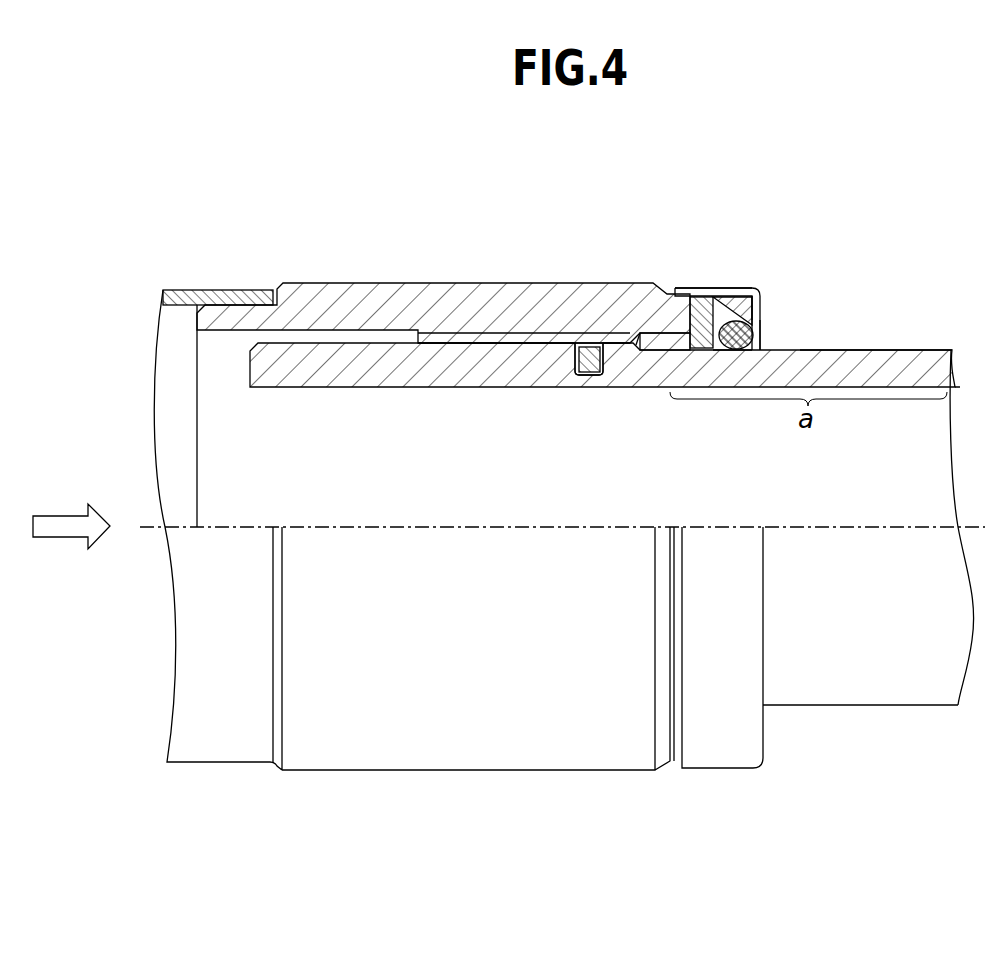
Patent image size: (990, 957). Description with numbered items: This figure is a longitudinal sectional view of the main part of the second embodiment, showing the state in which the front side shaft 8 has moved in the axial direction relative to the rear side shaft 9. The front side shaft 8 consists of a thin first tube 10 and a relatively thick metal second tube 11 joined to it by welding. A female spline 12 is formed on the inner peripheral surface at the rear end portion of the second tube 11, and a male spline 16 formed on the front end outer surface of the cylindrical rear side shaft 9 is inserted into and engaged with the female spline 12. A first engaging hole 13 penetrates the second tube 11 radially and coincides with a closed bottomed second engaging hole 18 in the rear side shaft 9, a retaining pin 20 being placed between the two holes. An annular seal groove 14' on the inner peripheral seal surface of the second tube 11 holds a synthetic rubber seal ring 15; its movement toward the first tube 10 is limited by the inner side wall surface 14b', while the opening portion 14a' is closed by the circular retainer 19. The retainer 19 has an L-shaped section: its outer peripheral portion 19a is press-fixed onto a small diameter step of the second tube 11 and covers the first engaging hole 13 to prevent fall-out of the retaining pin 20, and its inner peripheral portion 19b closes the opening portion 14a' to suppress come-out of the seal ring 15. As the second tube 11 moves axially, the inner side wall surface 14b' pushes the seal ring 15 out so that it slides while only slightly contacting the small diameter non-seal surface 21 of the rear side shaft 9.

The front side shaft 8 is at (328, 276).
The rear side shaft 9 is at (921, 345).
The first tube 10 is at (200, 292).
The second tube 11 is at (436, 305).
The female spline 12 is at (500, 352).
The first engaging hole 13 is at (688, 294).
The annular seal groove 14' is at (740, 265).
The opening portion 14a' is at (805, 289).
The inner side wall surface 14b' is at (713, 410).
The seal ring 15 is at (737, 351).
The male spline 16 is at (395, 341).
The second engaging hole 18 is at (582, 377).
The retainer 19 is at (768, 274).
The outer peripheral portion 19a is at (716, 290).
The inner peripheral portion 19b is at (762, 342).
The retaining pin 20 is at (601, 377).
The non-seal surface 21 is at (873, 350).